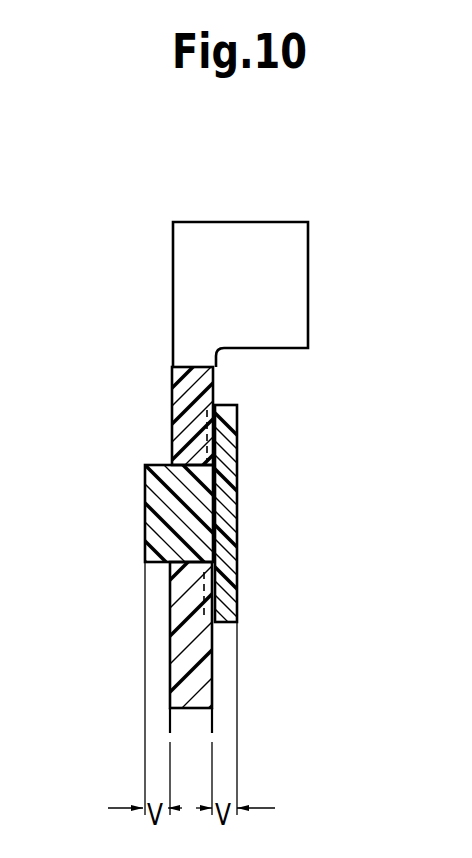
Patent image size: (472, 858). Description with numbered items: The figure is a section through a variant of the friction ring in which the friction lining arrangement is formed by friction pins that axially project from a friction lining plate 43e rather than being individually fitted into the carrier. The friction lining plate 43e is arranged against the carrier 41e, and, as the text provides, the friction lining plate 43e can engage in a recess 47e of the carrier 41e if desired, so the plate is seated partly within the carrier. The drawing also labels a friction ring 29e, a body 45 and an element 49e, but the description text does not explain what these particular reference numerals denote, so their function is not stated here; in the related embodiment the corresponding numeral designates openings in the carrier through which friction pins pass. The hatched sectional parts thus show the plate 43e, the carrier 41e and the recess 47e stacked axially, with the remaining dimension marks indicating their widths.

The clamping assembly 29e is at (146, 236).
The clamping body 45 is at (285, 302).
The recess 47e is at (215, 409).
The clamping nut 49e is at (182, 462).
The friction lining plate 43e is at (225, 578).
The carrier 41e is at (182, 650).